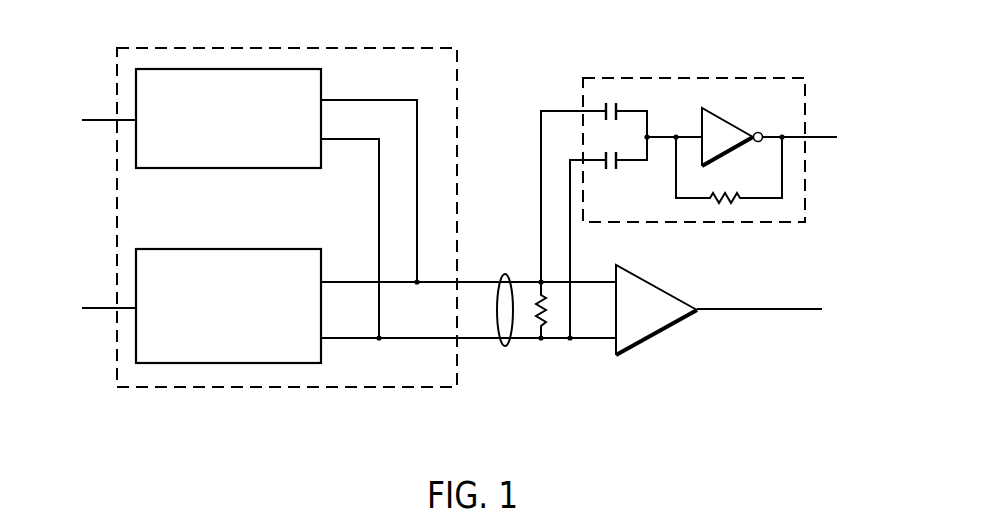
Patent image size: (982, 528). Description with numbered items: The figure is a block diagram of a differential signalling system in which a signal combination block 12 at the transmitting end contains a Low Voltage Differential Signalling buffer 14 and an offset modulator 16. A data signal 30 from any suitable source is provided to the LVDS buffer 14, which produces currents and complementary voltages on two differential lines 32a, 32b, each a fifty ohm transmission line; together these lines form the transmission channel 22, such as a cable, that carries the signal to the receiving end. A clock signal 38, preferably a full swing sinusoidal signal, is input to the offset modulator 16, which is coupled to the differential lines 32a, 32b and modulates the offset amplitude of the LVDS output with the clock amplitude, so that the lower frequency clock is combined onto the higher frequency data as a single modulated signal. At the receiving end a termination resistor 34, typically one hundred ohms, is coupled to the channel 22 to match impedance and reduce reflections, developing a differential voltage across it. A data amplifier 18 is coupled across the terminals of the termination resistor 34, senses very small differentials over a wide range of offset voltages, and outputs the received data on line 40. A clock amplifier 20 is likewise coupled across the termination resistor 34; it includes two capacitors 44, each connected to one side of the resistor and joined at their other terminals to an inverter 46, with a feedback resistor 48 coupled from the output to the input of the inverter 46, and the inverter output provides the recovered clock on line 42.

The signal combination block 12 is at (394, 47).
The Low Voltage Differential Signalling (LVDS) buffer 14 is at (257, 249).
The offset modulator 16 is at (250, 69).
The data amplifier 18 is at (684, 340).
The clock amplifier 20 is at (768, 78).
The transmission channel 22 is at (505, 274).
The data signal 30 is at (94, 309).
The differential line 32a is at (340, 282).
The differential line 32b is at (350, 339).
The termination resistor 34 is at (546, 316).
The clock signal 38 is at (94, 121).
The line 40 is at (792, 310).
The line 42 is at (821, 138).
The capacitors 44 is at (616, 103).
The inverter 46 is at (730, 126).
The feedback resistor 48 is at (732, 200).